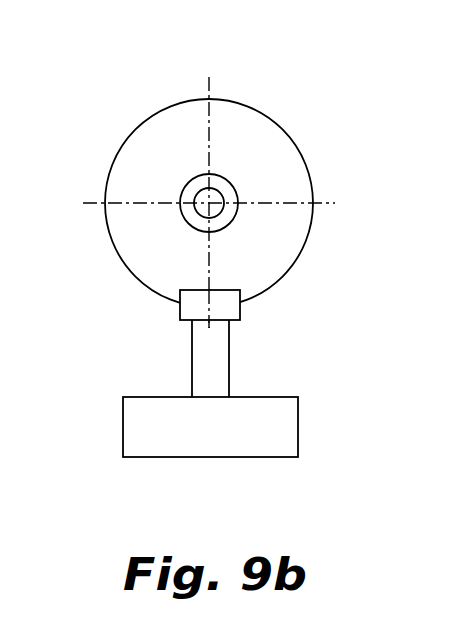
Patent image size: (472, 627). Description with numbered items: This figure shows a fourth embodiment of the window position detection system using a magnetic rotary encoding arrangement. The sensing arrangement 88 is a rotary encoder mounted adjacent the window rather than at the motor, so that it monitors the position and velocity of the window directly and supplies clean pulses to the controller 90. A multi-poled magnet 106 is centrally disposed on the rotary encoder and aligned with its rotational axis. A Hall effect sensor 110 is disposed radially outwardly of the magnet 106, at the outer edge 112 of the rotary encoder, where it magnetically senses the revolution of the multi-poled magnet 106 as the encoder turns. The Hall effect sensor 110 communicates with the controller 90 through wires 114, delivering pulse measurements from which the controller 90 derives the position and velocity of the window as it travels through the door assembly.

The sensing arrangement 88 is at (297, 72).
The multi-poled magnet 106 is at (221, 189).
The Hall effect sensor 110 is at (190, 290).
The outer edge 112 is at (287, 275).
The wires 114 is at (192, 358).
The controller 90 is at (253, 457).